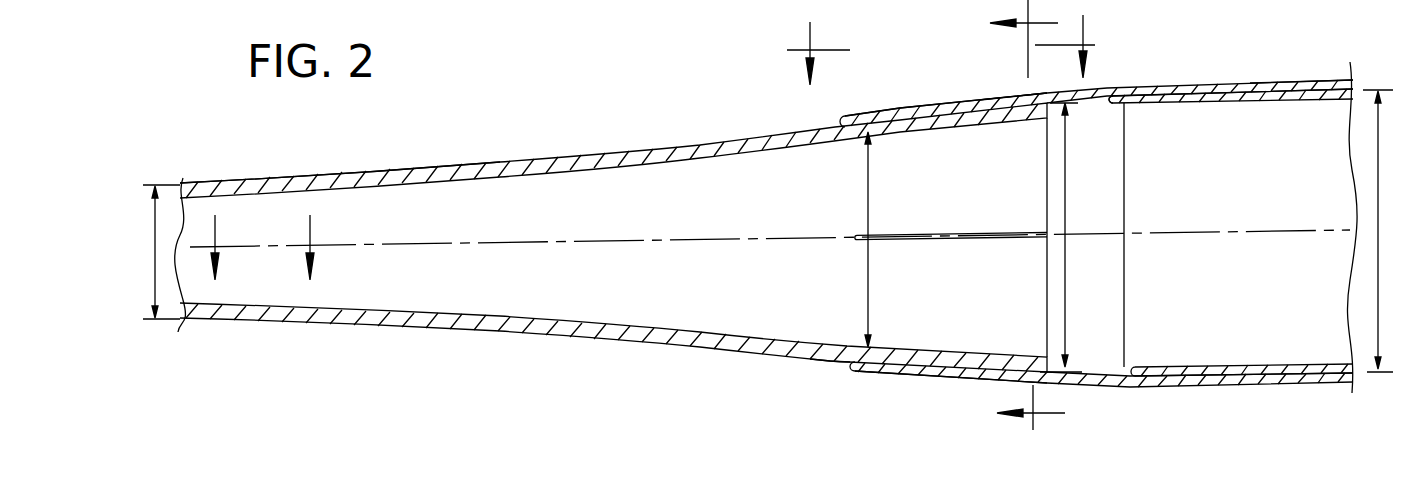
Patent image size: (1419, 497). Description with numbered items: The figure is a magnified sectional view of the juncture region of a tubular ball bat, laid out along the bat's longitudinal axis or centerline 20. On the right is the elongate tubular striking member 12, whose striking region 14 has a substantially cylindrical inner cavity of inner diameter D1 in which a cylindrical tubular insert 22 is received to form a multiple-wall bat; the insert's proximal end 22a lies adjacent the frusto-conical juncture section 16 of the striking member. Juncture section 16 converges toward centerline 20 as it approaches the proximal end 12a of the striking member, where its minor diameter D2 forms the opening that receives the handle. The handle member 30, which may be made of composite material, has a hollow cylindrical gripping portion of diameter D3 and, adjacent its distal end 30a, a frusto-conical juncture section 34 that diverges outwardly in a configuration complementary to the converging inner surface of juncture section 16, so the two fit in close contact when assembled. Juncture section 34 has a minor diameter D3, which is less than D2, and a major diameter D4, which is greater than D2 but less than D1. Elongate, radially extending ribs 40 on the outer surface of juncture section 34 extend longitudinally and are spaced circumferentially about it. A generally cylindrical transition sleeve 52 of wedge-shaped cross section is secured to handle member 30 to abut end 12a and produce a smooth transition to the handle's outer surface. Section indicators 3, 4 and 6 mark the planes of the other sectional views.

The striking member 12 is at (1096, 217).
The proximal end of striking member 12a is at (848, 114).
The striking region 14 is at (1300, 83).
The juncture section of striking member 16 is at (960, 113).
The longitudinal axis 20 is at (1267, 233).
The tubular insert 22 is at (1230, 207).
The proximal end of insert 22a is at (1108, 84).
The handle member 30 is at (616, 170).
The distal end of handle member 30a is at (1046, 147).
The juncture section of handle member 34 is at (940, 348).
The ribs 40 is at (1007, 97).
The transition sleeve 52 is at (833, 362).
The inner diameter of striking region D1 is at (1391, 231).
The minor diameter of striking member juncture section D2 is at (878, 197).
The diameter of gripping portion D3 is at (153, 258).
The major diameter of handle juncture section D4 is at (1068, 310).
The section line 3- 3 is at (1027, 224).
The section line 4- 4 is at (948, 50).
The section line 6- 6 is at (263, 246).